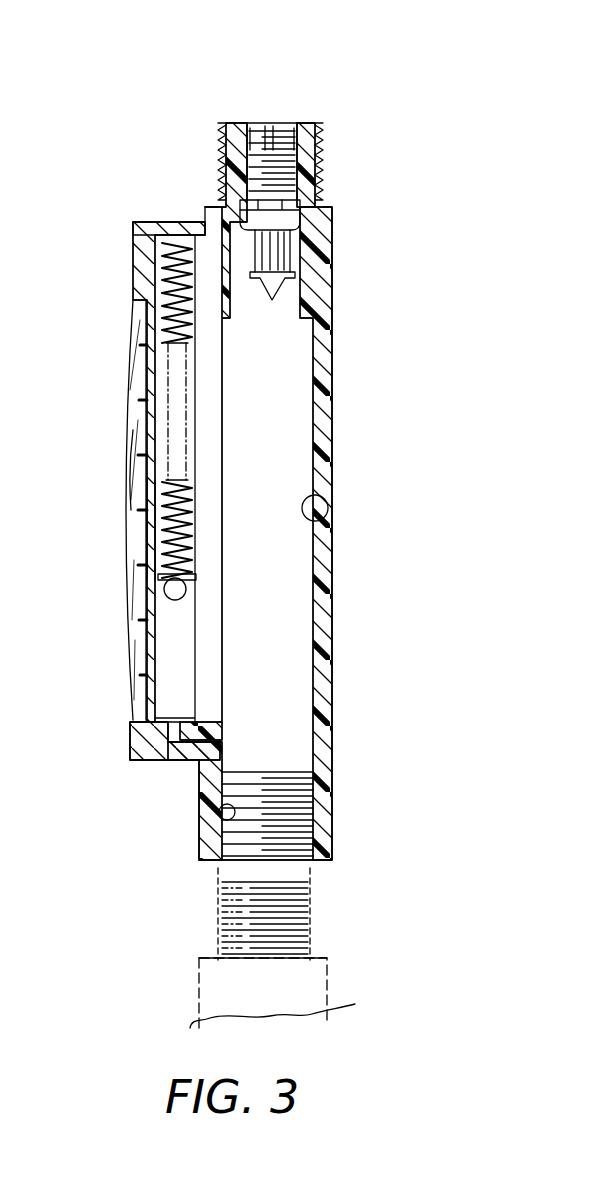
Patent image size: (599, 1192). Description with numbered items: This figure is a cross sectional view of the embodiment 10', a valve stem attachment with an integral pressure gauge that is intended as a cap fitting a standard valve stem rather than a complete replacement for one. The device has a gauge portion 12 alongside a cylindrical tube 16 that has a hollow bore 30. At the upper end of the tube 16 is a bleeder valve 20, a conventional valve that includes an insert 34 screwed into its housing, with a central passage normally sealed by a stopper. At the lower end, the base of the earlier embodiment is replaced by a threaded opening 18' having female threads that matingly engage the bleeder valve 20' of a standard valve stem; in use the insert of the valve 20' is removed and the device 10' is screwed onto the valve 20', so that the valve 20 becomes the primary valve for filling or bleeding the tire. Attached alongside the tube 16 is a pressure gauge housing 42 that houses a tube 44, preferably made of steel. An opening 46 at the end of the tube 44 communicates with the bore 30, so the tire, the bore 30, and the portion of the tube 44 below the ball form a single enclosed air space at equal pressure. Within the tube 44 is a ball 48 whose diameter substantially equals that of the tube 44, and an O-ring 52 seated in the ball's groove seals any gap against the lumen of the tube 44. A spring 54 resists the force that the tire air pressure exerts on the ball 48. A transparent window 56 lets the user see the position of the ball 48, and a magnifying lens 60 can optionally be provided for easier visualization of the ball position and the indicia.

The embodiment 10' is at (231, 444).
The gauge portion 12 is at (168, 220).
The cylindrical tube 16 is at (334, 410).
The threaded opening 18' is at (208, 801).
The bleeder valve 20 is at (309, 155).
The bleeder valve of a standard valve stem 20' is at (308, 949).
The hollow bore 30 is at (334, 526).
The insert 34 is at (324, 203).
The pressure gauge housing 42 is at (134, 240).
The tube 44 is at (190, 355).
The opening 46 is at (172, 718).
The ball 48 is at (164, 592).
The O-ring 52 is at (147, 575).
The spring 54 is at (128, 488).
The transparent window 56 is at (178, 520).
The magnifying lens 60 is at (130, 648).